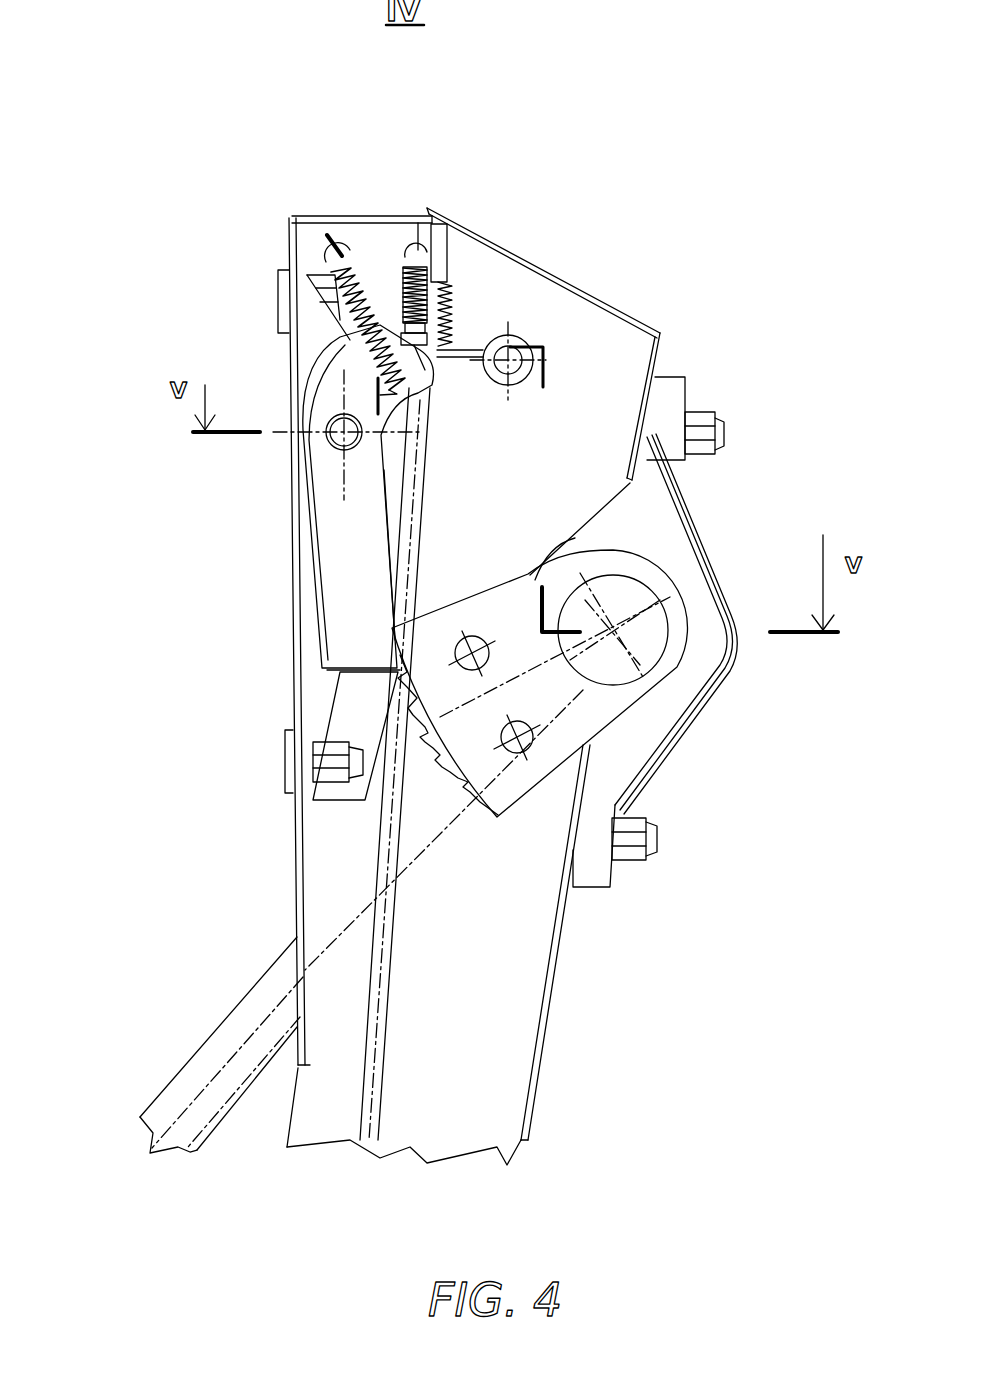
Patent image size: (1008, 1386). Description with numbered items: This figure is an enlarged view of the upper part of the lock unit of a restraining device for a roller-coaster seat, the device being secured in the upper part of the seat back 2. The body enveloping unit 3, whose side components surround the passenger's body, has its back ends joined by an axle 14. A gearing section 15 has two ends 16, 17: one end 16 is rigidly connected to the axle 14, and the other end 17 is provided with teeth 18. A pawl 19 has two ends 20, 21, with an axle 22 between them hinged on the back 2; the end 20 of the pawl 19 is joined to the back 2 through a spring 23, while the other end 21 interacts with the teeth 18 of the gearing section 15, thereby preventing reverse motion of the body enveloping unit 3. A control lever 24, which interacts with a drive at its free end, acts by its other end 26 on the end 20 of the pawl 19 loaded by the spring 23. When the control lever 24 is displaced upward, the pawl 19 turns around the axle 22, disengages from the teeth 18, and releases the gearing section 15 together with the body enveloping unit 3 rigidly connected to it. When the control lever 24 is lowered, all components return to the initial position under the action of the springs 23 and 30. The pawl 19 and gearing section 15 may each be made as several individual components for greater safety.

The back 2 is at (617, 310).
The body enveloping unit 3 is at (233, 1057).
The axle 14 is at (648, 657).
The gearing section 15 is at (587, 707).
The end of gearing section 16 is at (723, 667).
The end of gearing section 17 is at (623, 867).
The teeth 18 is at (440, 754).
The pawl 19 is at (357, 550).
The end of pawl 20 is at (387, 413).
The end of pawl 21 is at (382, 650).
The axle 22 is at (344, 432).
The spring 23 is at (410, 345).
The control lever 24 is at (388, 998).
The end of control lever 26 is at (430, 368).
The spring 30 is at (405, 268).